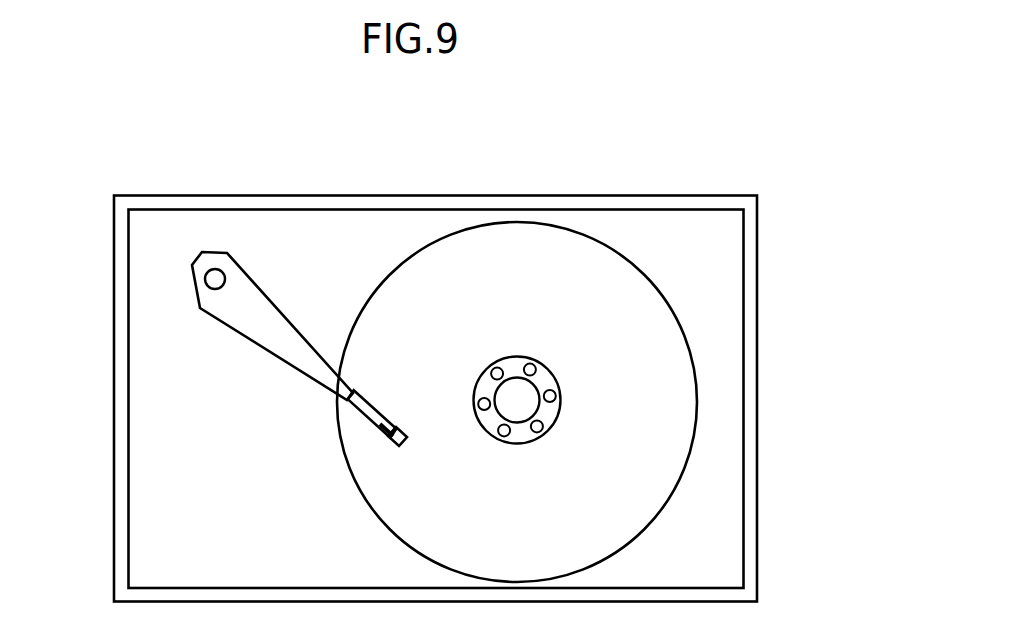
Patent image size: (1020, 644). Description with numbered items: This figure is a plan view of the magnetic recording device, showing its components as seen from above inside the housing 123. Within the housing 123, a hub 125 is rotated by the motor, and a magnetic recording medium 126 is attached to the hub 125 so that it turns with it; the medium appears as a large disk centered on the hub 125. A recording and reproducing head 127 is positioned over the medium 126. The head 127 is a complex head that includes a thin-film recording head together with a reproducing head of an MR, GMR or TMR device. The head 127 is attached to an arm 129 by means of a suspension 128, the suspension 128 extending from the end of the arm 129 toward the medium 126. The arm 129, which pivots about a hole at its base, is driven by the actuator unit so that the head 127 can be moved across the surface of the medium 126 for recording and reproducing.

The housing 123 is at (757, 583).
The hub 125 is at (544, 383).
The magnetic recording medium 126 is at (551, 252).
The recording and reproducing head 127 is at (402, 430).
The suspension 128 is at (375, 412).
The arm 129 is at (276, 358).